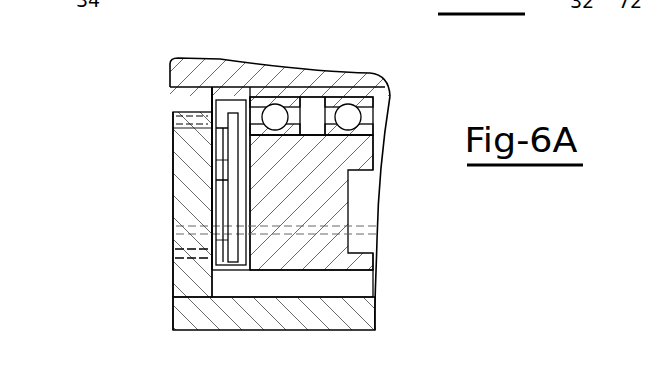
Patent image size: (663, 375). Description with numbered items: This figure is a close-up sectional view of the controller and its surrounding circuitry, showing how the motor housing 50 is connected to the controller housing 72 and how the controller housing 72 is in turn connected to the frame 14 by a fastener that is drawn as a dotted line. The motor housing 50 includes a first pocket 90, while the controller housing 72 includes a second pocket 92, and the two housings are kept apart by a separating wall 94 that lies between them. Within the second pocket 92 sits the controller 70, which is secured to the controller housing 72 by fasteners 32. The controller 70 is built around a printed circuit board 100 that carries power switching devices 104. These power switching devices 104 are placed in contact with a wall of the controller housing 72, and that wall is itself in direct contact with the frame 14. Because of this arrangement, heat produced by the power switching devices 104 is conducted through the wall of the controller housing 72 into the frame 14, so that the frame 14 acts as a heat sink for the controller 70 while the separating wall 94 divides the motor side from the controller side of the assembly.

The frame 14 is at (275, 314).
The fasteners 32 is at (222, 118).
The motor housing 50 is at (363, 260).
The controller 70 is at (192, 206).
The controller housing 72 is at (250, 238).
The first pocket 90 is at (332, 43).
The second pocket 92 is at (204, 74).
The separating wall 94 is at (253, 263).
The printed circuit board 100 is at (233, 140).
The power switching devices 104 is at (215, 163).